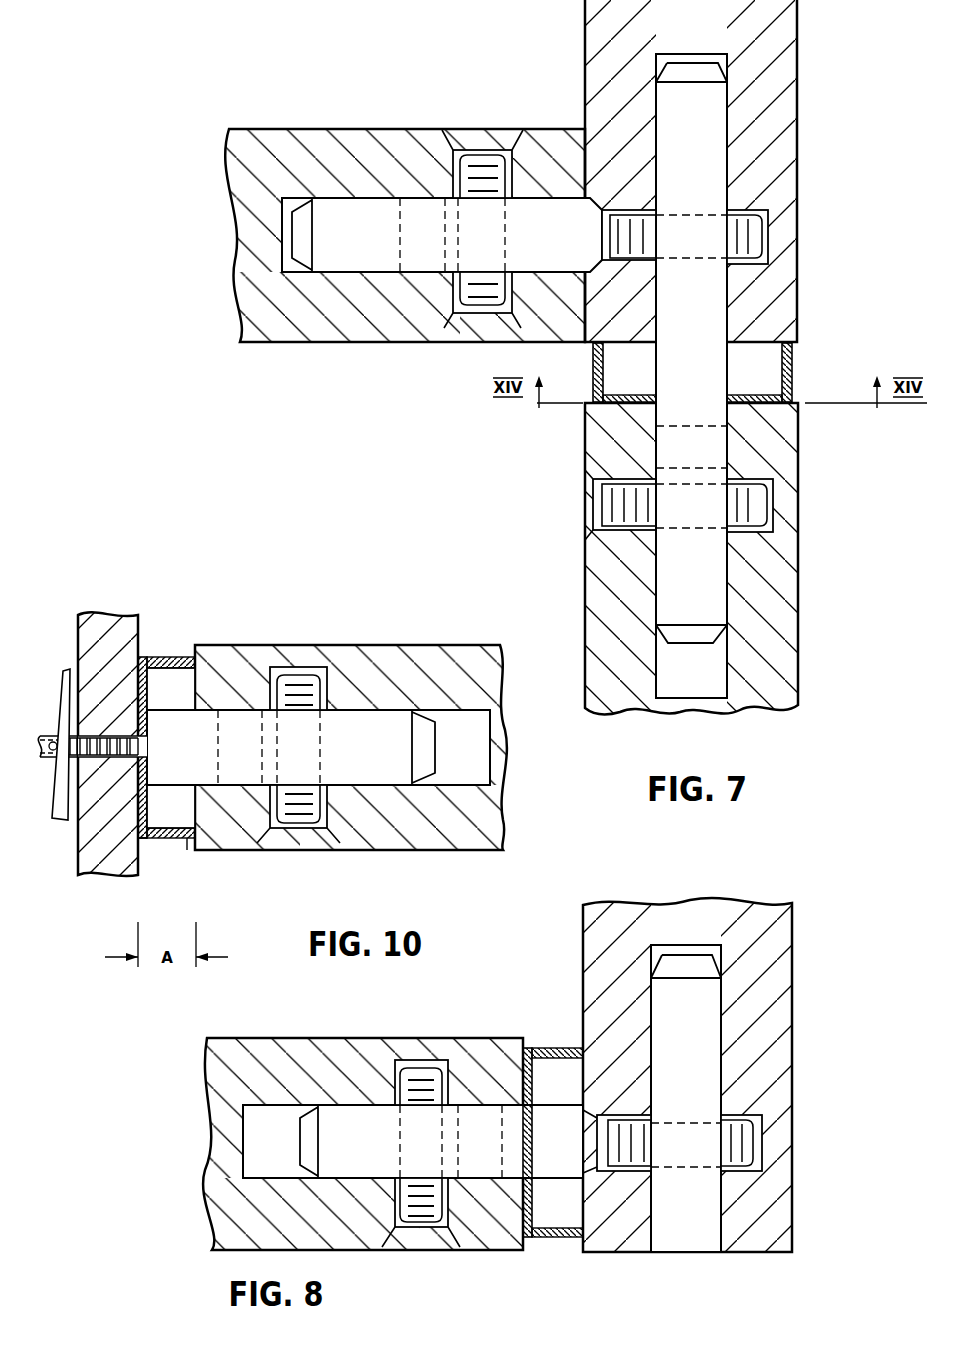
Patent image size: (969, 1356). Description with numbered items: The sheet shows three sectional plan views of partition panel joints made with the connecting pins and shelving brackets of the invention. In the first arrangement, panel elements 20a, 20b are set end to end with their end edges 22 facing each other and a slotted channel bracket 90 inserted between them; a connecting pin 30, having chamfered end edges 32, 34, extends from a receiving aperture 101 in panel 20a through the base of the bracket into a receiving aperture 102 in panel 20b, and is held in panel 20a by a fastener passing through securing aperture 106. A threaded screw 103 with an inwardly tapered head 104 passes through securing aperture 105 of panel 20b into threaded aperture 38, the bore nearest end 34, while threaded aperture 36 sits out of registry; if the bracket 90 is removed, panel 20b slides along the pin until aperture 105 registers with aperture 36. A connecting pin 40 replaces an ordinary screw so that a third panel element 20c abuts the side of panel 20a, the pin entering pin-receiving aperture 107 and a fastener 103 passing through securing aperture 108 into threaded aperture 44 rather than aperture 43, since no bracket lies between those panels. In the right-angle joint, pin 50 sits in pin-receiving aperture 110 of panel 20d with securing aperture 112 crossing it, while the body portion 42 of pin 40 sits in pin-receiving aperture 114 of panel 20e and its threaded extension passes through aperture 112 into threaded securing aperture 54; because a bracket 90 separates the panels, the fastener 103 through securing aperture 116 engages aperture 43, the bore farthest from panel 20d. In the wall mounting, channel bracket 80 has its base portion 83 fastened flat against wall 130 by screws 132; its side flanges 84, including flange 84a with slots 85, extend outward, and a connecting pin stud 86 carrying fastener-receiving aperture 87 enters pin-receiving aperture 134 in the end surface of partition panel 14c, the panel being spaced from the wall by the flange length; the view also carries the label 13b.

In FIG. 7, the panel element 20e is at (378, 143).
In FIG. 7, the panel element 20a is at (790, 133).
In FIG. 7, the panel element 20b is at (793, 578).
In FIG. 8, the panel element 20c is at (303, 1047).
In FIG. 8, the panel element 20d is at (773, 995).
In FIG. 7, the threaded screw 103 is at (488, 160).
In FIG. 10, the threaded screw 103 is at (290, 842).
In FIG. 8, the threaded screw 103 is at (421, 1215).
In FIG. 7, the securing aperture 108 is at (508, 178).
In FIG. 7, the connecting pin 40 is at (362, 243).
In FIG. 8, the connecting pin 40 is at (343, 1133).
In FIG. 7, the threaded aperture 44 is at (500, 245).
In FIG. 8, the threaded aperture 44 is at (490, 1142).
In FIG. 7, the pin-receiving aperture 107 is at (297, 265).
In FIG. 7, the threaded aperture 43 is at (411, 264).
In FIG. 8, the threaded aperture 43 is at (405, 1163).
In FIG. 7, the chamfered end edge 32 is at (668, 72).
In FIG. 7, the receiving aperture 101 is at (724, 66).
In FIG. 7, the connecting pin 30 is at (678, 144).
In FIG. 7, the securing aperture 106 is at (628, 213).
In FIG. 7, the end edge 22 is at (792, 360).
In FIG. 8, the end edge 22 is at (528, 1243).
In FIG. 7, the channel bracket 90 is at (792, 393).
In FIG. 8, the channel bracket 90 is at (538, 1047).
In FIG. 7, the securing aperture 105 is at (625, 478).
In FIG. 7, the inwardly tapered head 104 is at (593, 502).
In FIG. 7, the threaded aperture 36 is at (715, 468).
In FIG. 7, the threaded aperture 38 is at (695, 526).
In FIG. 7, the chamfered end edge 34 is at (689, 632).
In FIG. 7, the receiving aperture 102 is at (727, 672).
In FIG. 10, the wall 130 is at (105, 618).
In FIG. 10, the screw 132 is at (57, 717).
In FIG. 10, the slot 85 is at (165, 657).
In FIG. 10, the side flange 84 is at (187, 657).
In FIG. 10, the base portion 83 is at (152, 684).
In FIG. 10, the connecting pin stud 86 is at (194, 754).
In FIG. 10, the fastener-receiving aperture 87 is at (221, 727).
In FIG. 10, the partition panel 14c is at (357, 655).
In FIG. 10, the pin-receiving aperture 134 is at (440, 777).
In FIG. 10, the annular recess 13b is at (322, 805).
In FIG. 10, the channel bracket 80 is at (187, 846).
In FIG. 10, the side flange 84a is at (146, 840).
In FIG. 8, the pin-receiving aperture 114 is at (259, 1178).
In FIG. 8, the body portion 42 is at (352, 1168).
In FIG. 8, the securing aperture 116 is at (447, 1210).
In FIG. 8, the pin-receiving aperture 110 is at (714, 957).
In FIG. 8, the connecting pin 50 is at (677, 1011).
In FIG. 8, the securing aperture 112 is at (614, 1119).
In FIG. 8, the threaded securing aperture 54 is at (673, 1157).